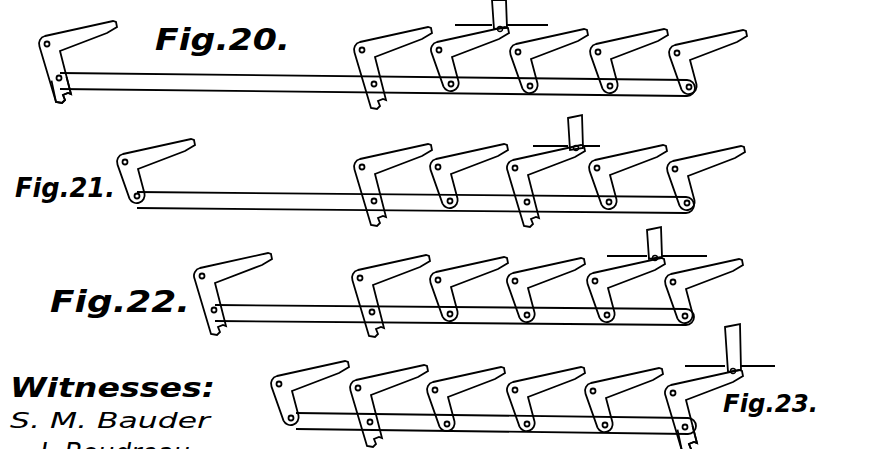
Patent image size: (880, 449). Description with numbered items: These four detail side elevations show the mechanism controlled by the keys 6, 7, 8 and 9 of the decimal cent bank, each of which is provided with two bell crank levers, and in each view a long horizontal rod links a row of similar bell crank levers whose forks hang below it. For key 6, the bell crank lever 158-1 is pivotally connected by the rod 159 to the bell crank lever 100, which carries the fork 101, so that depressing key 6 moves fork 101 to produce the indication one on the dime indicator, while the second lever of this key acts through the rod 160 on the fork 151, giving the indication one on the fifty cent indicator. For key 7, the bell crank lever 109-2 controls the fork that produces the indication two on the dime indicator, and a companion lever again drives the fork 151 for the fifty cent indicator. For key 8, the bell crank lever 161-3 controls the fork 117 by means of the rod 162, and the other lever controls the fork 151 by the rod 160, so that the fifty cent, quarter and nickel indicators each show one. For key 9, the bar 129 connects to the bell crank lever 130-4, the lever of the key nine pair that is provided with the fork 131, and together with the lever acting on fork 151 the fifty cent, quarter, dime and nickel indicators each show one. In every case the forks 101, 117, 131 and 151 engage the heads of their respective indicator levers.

In FIG. 20, the bell crank lever 100 is at (78, 55).
In FIG. 20, the fork 101 is at (70, 104).
In FIG. 20, the fork 151 is at (382, 103).
In FIG. 21, the fork 151 is at (381, 221).
In FIG. 22, the fork 151 is at (383, 332).
In FIG. 23, the fork 151 is at (383, 442).
In FIG. 20, the bell crank lever 158-1 is at (470, 59).
In FIG. 20, the rod 159 is at (377, 75).
In FIG. 20, the rod 160 is at (606, 61).
In FIG. 21, the rod 160 is at (682, 178).
In FIG. 22, the rod 160 is at (681, 291).
In FIG. 23, the rod 160 is at (601, 400).
In FIG. 21, the rod 162 is at (415, 193).
In FIG. 22, the rod 162 is at (454, 305).
In FIG. 21, the bell crank lever 109-2 is at (546, 186).
In FIG. 22, the fork 117 is at (222, 333).
In FIG. 22, the bell crank lever 161-3 is at (610, 268).
In FIG. 23, the bar 129 is at (310, 393).
In FIG. 23, the hooked lever 130-4 is at (702, 398).
In FIG. 23, the fork 131 is at (700, 444).
In FIG. 20, the decimal cent key 6 is at (501, 16).
In FIG. 21, the decimal cent key 7 is at (566, 133).
In FIG. 22, the decimal cent key 8 is at (657, 244).
In FIG. 23, the decimal cent key 9 is at (730, 349).